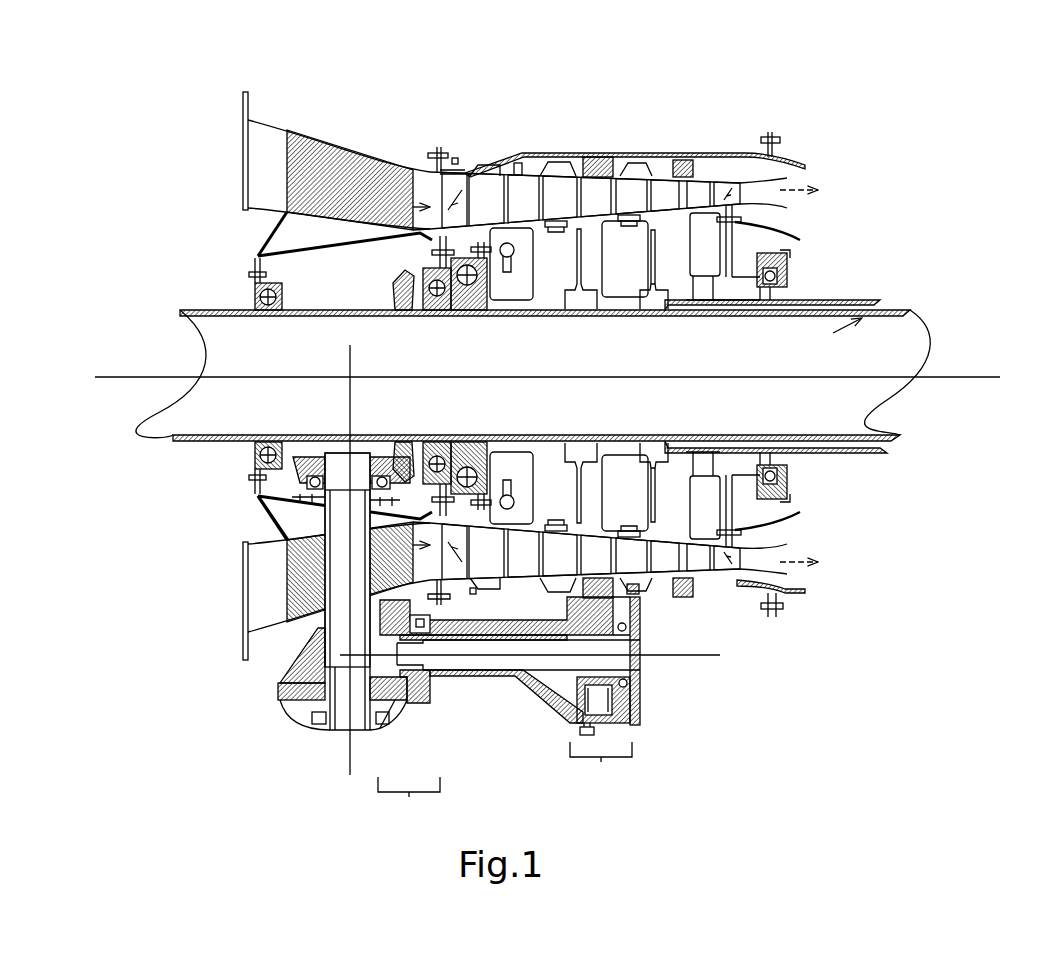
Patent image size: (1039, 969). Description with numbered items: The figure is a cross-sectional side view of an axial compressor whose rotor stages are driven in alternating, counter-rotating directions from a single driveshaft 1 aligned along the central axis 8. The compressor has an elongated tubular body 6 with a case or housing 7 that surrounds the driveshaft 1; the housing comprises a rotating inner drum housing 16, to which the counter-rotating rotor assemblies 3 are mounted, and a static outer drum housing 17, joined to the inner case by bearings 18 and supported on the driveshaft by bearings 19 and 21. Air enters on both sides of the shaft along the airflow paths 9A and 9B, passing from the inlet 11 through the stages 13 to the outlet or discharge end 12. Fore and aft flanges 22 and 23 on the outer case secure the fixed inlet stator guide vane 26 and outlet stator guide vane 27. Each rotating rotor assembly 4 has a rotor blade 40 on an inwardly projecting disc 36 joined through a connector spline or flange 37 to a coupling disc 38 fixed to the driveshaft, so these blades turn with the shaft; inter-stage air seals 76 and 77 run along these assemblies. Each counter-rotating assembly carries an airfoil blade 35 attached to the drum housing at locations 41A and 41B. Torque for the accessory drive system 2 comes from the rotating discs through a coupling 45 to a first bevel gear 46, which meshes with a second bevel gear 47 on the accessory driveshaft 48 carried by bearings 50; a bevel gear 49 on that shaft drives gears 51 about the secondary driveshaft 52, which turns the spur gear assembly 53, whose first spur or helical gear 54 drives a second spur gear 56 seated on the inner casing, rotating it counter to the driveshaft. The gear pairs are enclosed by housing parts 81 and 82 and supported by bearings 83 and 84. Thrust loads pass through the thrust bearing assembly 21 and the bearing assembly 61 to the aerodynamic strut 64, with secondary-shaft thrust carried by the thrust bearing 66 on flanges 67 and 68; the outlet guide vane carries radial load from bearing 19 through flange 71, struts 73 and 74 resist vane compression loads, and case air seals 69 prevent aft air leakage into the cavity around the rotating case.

The driveshaft 1 is at (800, 300).
The accessory drive system 2 is at (240, 688).
The counter-rotating rotor assemblies 3 is at (698, 208).
The rotating rotor assemblies 4 is at (530, 228).
The tubular body 6 is at (828, 227).
The compressor case or housing 7 is at (737, 594).
The central axis 8 is at (948, 372).
The airflow path 9A is at (413, 182).
The airflow path 9B is at (290, 585).
The inlet 11 is at (340, 133).
The outlet or discharge end 12 is at (790, 181).
The stages 13 is at (486, 165).
The rotating inner case or drum housing 16 is at (518, 163).
The static outer case or drum housing 17 is at (588, 150).
The bearings 18 is at (470, 374).
The roller bearing 19 is at (788, 268).
The thrust bearing assembly 21 is at (425, 276).
The fore flange 22 is at (441, 148).
The aft flange 23 is at (770, 128).
The inlet stator guide vane 26 is at (433, 185).
The outlet stator guide vane 27 is at (718, 195).
The airfoil blade or vane 35 is at (698, 190).
The inwardly projecting support member or disc 36 is at (582, 278).
The connector spline/flange 37 is at (703, 308).
The coupling or compressor disc 38 is at (660, 309).
The rotor blade 40 is at (591, 376).
The drum housing connection 41A is at (557, 164).
The drum housing connection 41B is at (640, 164).
The coupling 45 is at (472, 310).
The first bevel gear 46 is at (394, 282).
The second bevel gear 47 is at (307, 460).
The driveshaft 48 is at (347, 466).
The bevel gear 49 is at (282, 698).
The bearings 50 is at (268, 500).
The gears 51 is at (430, 610).
The secondary driveshaft 52 is at (515, 666).
The spur gear assembly 53 is at (557, 707).
The first spur or helical gear 54 is at (598, 732).
The second spur gear 56 is at (610, 158).
The bearing assembly 61 is at (496, 268).
The aerodynamic strut 64 is at (352, 180).
The thrust bearing 66 is at (254, 300).
The flange 67 is at (262, 250).
The flange 68 is at (348, 246).
The case air seals 69 is at (684, 160).
The flange 71 is at (758, 253).
The strut 73 is at (547, 597).
The strut 74 is at (660, 582).
The inter-stage air seal 76 is at (562, 230).
The inter-stage air seal 77 is at (634, 224).
The gear housing part 81 is at (308, 655).
The gear housing bevel part 82 is at (410, 720).
The support bearing 83 is at (425, 703).
The support bearing 84 is at (640, 690).